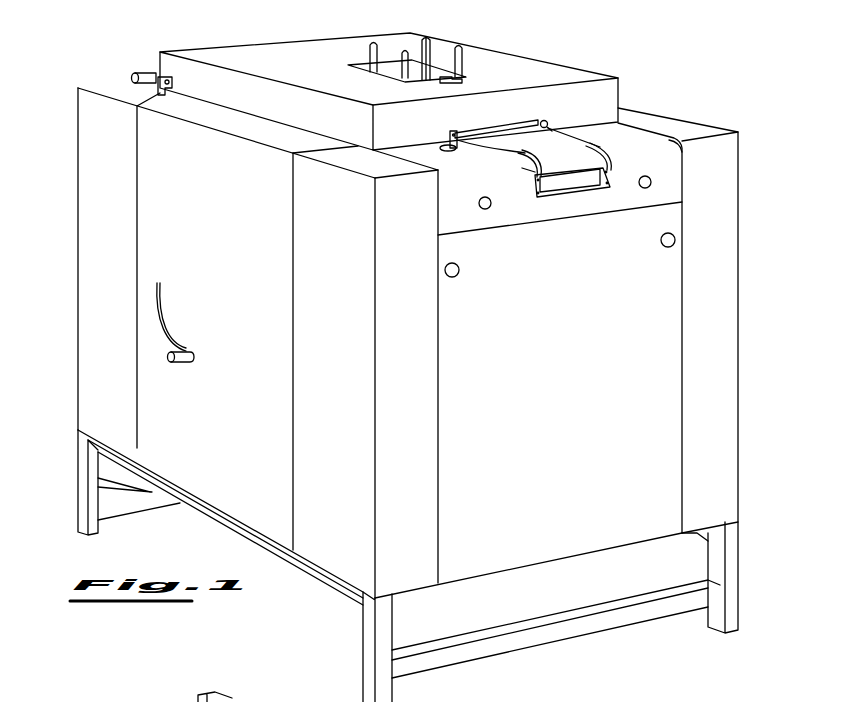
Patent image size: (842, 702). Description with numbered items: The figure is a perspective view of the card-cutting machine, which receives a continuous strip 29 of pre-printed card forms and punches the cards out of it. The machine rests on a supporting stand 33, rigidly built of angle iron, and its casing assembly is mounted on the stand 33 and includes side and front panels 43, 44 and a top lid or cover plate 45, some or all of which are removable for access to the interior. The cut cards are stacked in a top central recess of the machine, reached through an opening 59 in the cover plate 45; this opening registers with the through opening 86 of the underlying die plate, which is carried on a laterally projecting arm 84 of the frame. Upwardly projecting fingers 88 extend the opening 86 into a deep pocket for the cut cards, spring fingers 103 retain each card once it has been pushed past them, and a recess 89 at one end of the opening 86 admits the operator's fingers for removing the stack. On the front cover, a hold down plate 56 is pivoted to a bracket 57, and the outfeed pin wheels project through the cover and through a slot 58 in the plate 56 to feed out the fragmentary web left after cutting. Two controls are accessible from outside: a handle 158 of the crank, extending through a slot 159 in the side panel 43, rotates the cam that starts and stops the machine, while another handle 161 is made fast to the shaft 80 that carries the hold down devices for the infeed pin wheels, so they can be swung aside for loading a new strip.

The strip 29 is at (613, 172).
The supporting stand 33 is at (70, 488).
The side panel 43 is at (285, 477).
The front panel 44 is at (533, 555).
The top lid or cover plate 45 is at (560, 73).
The hold down plate 56 is at (603, 152).
The bracket 57 is at (547, 121).
The slot 58 is at (522, 172).
The opening 59 is at (392, 75).
The shaft 80 is at (175, 88).
The laterally projecting arm 84 is at (187, 697).
The through opening 86 is at (419, 68).
The fingers 88 is at (463, 62).
The recess 89 is at (438, 84).
The spring fingers 103 is at (433, 78).
The handle 158 is at (169, 358).
The slot 159 is at (163, 308).
The handle 161 is at (134, 75).